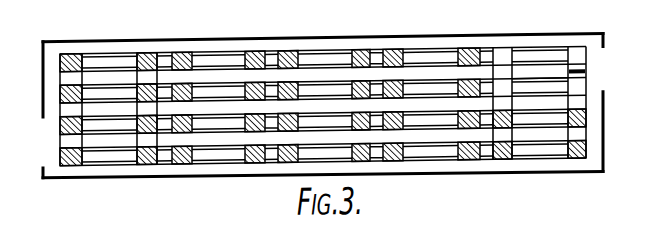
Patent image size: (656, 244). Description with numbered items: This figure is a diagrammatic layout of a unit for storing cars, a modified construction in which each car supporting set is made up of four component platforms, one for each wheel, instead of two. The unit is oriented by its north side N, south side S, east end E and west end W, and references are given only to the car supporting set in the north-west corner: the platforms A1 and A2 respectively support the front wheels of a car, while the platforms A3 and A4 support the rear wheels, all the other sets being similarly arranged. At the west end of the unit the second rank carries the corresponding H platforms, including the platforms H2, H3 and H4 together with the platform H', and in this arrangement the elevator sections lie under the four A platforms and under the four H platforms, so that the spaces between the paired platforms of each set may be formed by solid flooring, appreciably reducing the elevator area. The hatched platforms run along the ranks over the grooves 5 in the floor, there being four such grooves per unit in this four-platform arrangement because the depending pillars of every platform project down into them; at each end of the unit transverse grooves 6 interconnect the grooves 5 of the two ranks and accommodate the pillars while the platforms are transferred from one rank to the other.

The platform A1 is at (66, 53).
The platform A2 is at (82, 84).
The platform A3 is at (157, 84).
The platform A4 is at (137, 84).
The platform H2 is at (72, 165).
The platform H3 is at (137, 123).
The platform H4 is at (155, 165).
The platform H' is at (58, 133).
The north side N is at (323, 25).
The south side S is at (323, 188).
The east end E is at (612, 102).
The west end W is at (32, 110).
The grooves 5 is at (546, 84).
The transverse grooves 6 is at (586, 78).